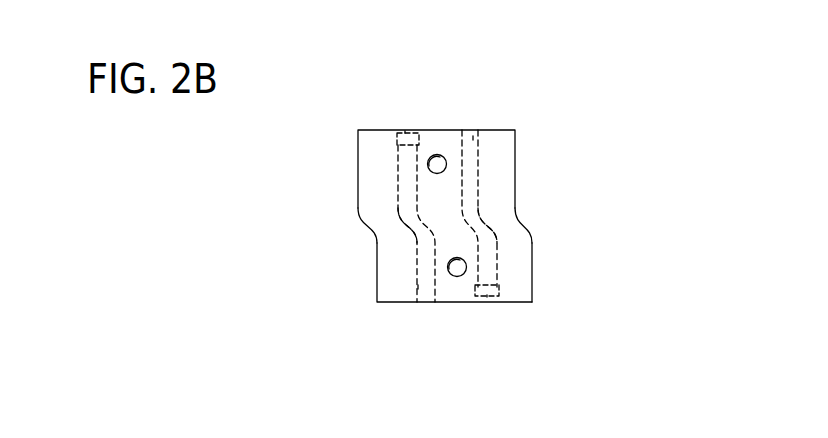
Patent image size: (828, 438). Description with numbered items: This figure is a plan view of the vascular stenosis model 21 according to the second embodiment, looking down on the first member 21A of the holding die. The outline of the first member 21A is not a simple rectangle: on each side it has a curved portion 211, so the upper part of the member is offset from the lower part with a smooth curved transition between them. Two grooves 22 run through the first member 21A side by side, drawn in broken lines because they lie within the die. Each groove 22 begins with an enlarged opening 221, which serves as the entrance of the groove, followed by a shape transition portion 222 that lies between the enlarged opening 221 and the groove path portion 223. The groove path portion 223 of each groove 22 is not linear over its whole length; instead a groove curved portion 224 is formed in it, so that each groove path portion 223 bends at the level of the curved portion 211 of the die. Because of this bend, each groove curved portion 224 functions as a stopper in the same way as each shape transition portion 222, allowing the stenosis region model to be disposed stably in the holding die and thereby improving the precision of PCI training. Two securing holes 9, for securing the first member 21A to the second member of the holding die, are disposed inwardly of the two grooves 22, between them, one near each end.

The vascular stenosis model 21 is at (537, 133).
The first member 21A is at (520, 275).
The curved portion 211 is at (368, 232).
The groove 22 is at (413, 122).
The enlarged opening 221 is at (405, 131).
The shape transition portion 222 is at (393, 138).
The groove path portion 223 is at (473, 138).
The groove curved portion 224 is at (408, 229).
The securing hole 9 is at (437, 154).